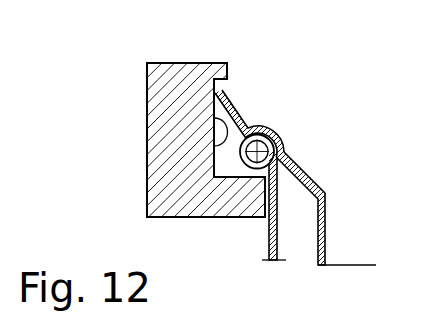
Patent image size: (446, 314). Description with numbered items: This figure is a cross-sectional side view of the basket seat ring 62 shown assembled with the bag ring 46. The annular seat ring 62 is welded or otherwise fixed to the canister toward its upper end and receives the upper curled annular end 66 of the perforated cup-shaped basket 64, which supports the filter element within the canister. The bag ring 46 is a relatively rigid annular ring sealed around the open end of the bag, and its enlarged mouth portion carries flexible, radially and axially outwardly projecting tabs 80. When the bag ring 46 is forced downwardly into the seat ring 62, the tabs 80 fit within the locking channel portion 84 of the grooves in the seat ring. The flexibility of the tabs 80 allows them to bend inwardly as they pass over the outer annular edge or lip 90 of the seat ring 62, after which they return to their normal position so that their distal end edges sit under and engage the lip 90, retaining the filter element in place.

The basket seat ring 62 is at (147, 107).
The outer annular edge or lip 90 is at (228, 73).
The locking channel portion 84 is at (240, 152).
The upper curled annular end 66 is at (242, 151).
The tabs 80 is at (232, 103).
The bag ring 46 is at (328, 226).
The perforated cup-shaped basket 64 is at (268, 232).